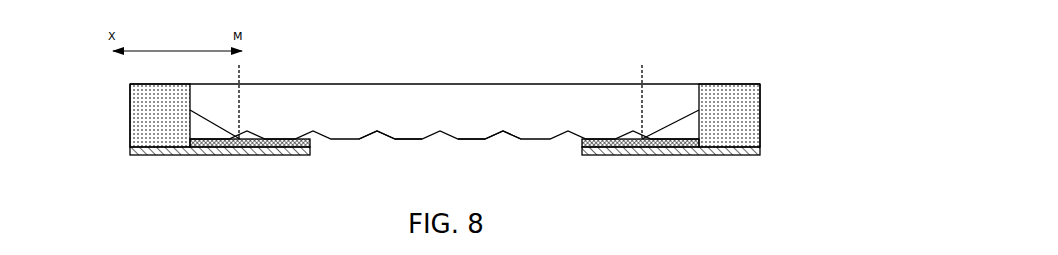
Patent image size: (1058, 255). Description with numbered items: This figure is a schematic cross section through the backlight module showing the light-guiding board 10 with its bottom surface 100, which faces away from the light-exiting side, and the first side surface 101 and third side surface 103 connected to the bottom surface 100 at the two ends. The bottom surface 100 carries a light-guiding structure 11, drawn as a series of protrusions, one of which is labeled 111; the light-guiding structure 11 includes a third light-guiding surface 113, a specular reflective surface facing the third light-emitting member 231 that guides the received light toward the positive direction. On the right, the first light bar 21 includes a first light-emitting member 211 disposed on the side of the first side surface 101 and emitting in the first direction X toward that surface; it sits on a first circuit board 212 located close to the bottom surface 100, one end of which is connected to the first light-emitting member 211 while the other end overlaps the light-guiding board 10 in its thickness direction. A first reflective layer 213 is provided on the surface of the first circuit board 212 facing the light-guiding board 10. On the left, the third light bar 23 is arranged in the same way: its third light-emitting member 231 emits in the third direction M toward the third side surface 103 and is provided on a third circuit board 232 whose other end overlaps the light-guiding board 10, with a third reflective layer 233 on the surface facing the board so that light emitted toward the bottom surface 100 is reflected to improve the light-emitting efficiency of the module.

The light-guiding board 10 is at (533, 94).
The light-guiding structure 11 is at (377, 131).
The bottom surface 100 is at (408, 145).
The first side surface 101 is at (702, 100).
The third side surface 103 is at (186, 98).
The protrusion 111 is at (512, 141).
The third light-guiding surface 113 is at (500, 144).
The first light bar 21 is at (706, 132).
The first light-emitting member 211 is at (740, 118).
The first circuit board 212 is at (761, 151).
The first reflective layer 213 is at (665, 154).
The third light bar 23 is at (177, 130).
The third light-emitting member 231 is at (152, 118).
The third circuit board 232 is at (130, 150).
The third reflective layer 233 is at (222, 154).